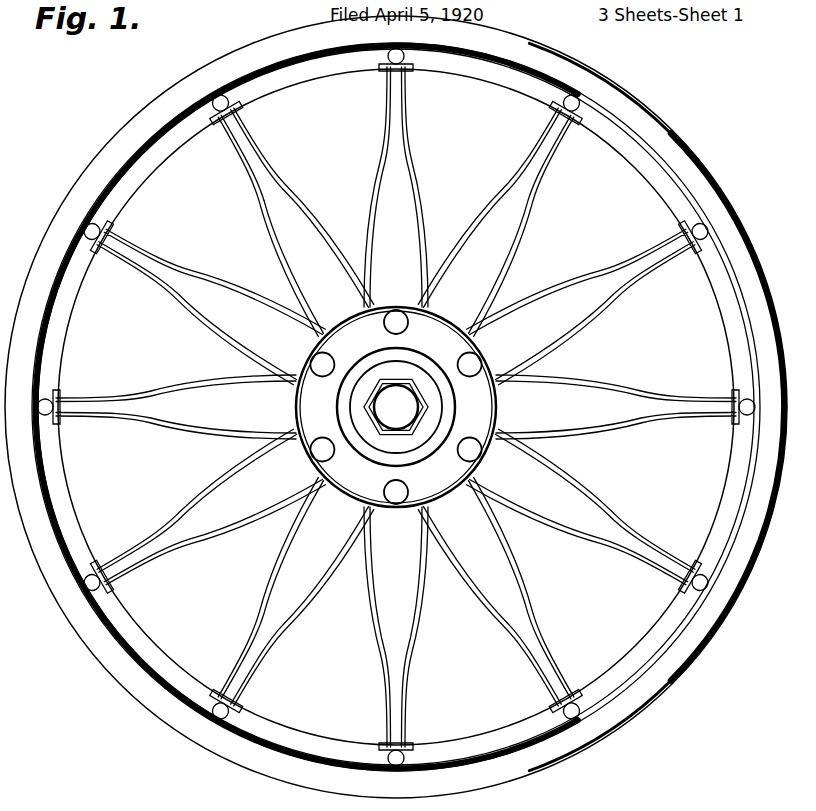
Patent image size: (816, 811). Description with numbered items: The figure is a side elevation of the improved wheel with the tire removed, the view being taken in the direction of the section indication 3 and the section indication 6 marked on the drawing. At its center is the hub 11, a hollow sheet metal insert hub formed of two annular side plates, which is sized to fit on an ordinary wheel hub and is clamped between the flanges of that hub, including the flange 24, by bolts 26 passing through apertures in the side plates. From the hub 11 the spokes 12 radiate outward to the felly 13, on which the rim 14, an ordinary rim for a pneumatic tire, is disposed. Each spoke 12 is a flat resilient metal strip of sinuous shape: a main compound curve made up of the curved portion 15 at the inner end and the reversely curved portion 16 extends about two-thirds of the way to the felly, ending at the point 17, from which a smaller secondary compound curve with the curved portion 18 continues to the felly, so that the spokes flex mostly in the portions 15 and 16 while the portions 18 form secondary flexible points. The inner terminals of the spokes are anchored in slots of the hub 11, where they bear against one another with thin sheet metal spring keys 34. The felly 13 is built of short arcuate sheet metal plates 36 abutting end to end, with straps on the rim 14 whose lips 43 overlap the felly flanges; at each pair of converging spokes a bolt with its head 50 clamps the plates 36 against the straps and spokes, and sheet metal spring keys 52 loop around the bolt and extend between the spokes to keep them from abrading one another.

The bolt holes 3 is at (482, 367).
The spoke end clip 6 is at (698, 553).
The hub 11 is at (301, 463).
The spokes 12 is at (192, 498).
The felly 13 is at (74, 487).
The rim 14 is at (110, 648).
The curved portion 15 is at (332, 270).
The reversely curved portion 16 is at (268, 167).
The point 17 is at (265, 165).
The curved portion 18 is at (253, 126).
The flange 24 is at (437, 483).
The bolts 26 is at (470, 450).
The spring keys 34 is at (434, 293).
The arcuate sections or plates 36 is at (640, 660).
The lips 43 is at (553, 708).
The heads 50 is at (580, 723).
The spring keys 52 is at (553, 693).